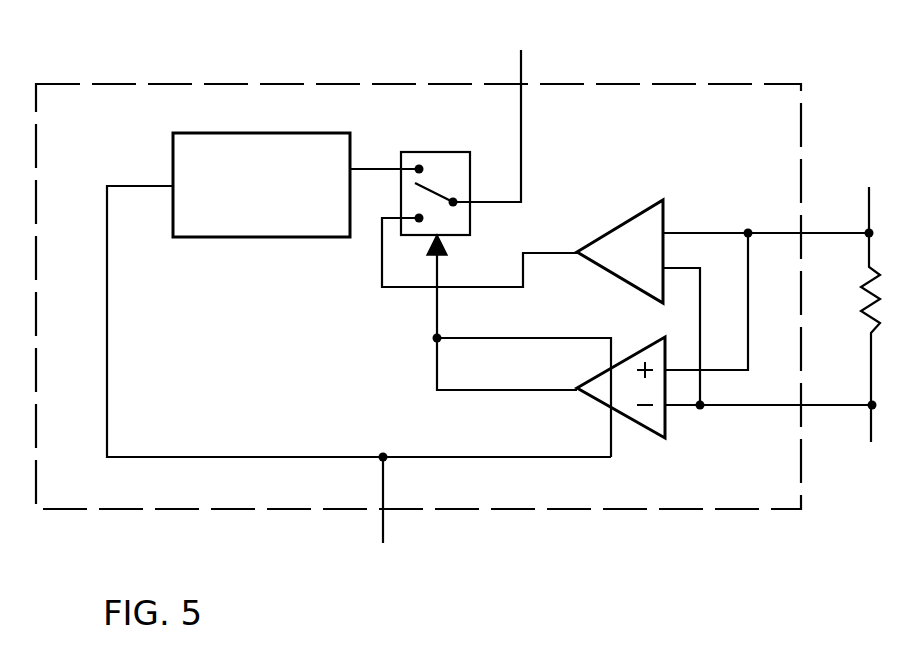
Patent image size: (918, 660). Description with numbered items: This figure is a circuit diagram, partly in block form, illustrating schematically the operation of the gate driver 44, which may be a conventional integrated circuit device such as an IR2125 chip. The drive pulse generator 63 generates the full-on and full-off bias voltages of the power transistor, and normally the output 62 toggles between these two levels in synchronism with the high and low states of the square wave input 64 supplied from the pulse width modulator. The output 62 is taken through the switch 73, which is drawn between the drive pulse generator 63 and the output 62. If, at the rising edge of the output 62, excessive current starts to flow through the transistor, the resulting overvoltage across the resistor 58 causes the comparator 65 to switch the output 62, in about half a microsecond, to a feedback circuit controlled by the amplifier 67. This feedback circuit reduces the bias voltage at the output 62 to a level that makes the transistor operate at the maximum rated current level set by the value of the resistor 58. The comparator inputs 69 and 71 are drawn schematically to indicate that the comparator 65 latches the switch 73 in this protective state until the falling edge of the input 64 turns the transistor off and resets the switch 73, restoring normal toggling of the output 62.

The gate driver 44 is at (652, 83).
The resistor 58 is at (858, 313).
The output 62 is at (494, 112).
The drive pulse generator 63 is at (285, 238).
The square wave input 64 is at (390, 517).
The comparator 65 is at (643, 417).
The amplifier 67 is at (625, 240).
The comparator input 69 is at (516, 338).
The comparator input 71 is at (287, 456).
The switch 73 is at (430, 152).